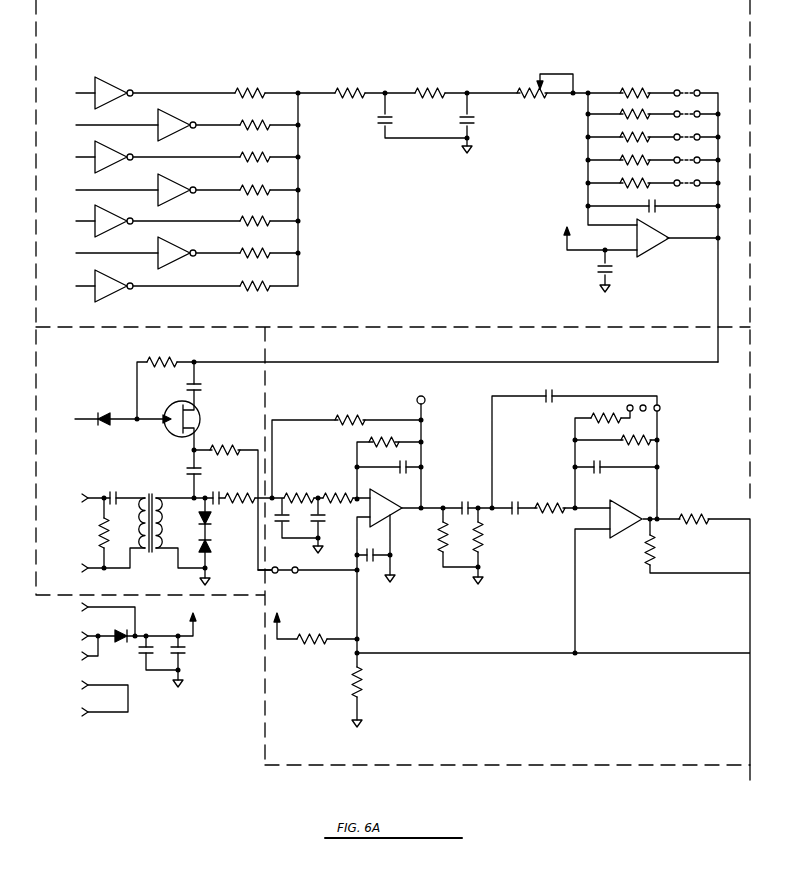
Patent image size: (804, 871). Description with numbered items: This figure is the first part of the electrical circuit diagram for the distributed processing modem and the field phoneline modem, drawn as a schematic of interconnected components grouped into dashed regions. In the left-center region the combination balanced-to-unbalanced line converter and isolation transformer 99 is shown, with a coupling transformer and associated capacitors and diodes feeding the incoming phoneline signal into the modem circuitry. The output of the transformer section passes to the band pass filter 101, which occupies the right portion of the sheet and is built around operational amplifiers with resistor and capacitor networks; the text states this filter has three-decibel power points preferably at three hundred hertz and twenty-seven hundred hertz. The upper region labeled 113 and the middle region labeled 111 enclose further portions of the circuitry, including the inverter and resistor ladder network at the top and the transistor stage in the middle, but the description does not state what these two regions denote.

The digital-to-analog resistor ladder section 113 is at (126, 25).
The demodulator and timing section 111 is at (248, 352).
The combination balanced-to-unbalanced line converter and isolation transformer 99 is at (166, 586).
The band pass filter 101 is at (300, 682).